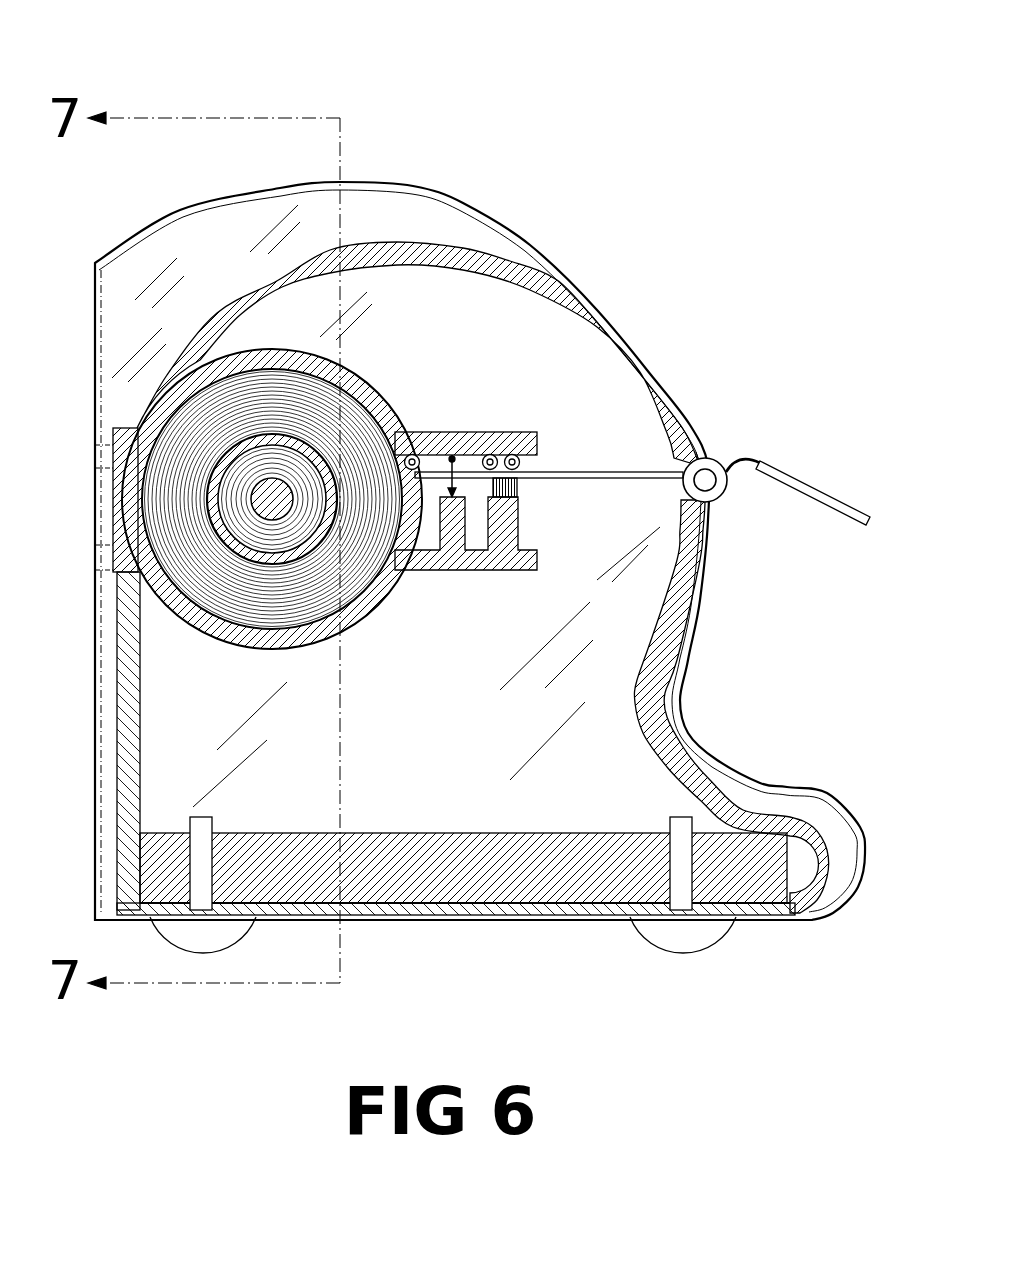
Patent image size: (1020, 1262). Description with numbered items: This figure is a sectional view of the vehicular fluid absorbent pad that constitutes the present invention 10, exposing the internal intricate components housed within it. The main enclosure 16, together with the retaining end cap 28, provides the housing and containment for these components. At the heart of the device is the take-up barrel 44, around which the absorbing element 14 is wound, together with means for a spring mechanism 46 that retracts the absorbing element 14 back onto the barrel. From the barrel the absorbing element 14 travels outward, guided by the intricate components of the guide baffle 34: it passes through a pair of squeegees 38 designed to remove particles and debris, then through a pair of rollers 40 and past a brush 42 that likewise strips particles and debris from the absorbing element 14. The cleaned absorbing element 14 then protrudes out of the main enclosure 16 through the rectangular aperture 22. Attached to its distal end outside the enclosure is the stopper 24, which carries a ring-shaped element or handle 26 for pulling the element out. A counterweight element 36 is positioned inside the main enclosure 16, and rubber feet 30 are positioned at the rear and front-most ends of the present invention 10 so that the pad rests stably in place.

The vehicular fluid absorbent pad 10 is at (578, 160).
The absorbing element 14 is at (355, 545).
The main enclosure 16 is at (418, 238).
The rectangular aperture 22 is at (700, 445).
The stopper 24 is at (704, 462).
The handle 26 is at (793, 483).
The retaining end cap 28 is at (368, 184).
The rubber feet 30 is at (733, 946).
The guide baffle 34 is at (258, 457).
The counterweight element 36 is at (446, 888).
The squeegees 38 is at (446, 432).
The rollers 40 is at (537, 448).
The brush 42 is at (522, 498).
The take-up barrel 44 is at (228, 462).
The spring mechanism 46 is at (265, 476).